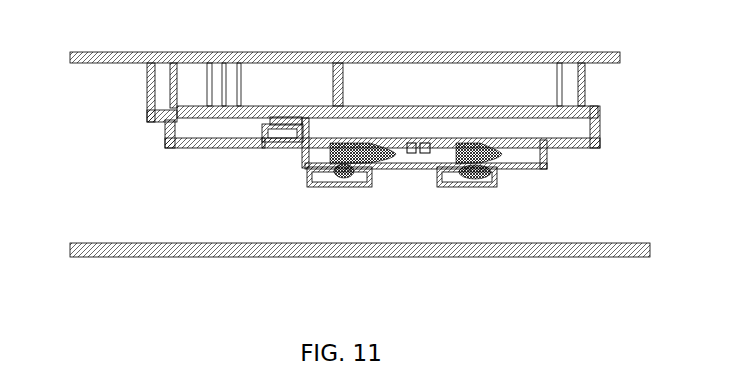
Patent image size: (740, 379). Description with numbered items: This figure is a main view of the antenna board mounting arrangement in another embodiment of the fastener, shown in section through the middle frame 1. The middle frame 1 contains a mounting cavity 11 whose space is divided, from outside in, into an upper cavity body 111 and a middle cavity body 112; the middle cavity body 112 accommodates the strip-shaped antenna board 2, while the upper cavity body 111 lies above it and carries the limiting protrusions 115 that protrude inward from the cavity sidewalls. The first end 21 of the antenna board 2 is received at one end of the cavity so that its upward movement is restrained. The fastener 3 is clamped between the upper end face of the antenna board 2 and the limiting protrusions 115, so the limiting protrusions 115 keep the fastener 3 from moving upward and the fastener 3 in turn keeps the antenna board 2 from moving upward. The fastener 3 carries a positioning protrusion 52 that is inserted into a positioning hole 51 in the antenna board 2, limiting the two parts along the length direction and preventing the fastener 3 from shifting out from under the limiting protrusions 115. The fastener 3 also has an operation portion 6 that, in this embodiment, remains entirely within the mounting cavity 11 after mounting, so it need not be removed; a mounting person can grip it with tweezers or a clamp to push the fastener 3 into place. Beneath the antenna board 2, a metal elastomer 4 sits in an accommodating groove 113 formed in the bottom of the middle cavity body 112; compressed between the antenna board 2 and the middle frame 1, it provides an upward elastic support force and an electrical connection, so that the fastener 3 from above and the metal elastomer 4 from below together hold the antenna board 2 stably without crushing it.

The middle frame 1 is at (337, 230).
The antenna board 2 is at (444, 134).
The first end 21 is at (574, 127).
The fastener 3 is at (227, 112).
The metal elastomer 4 is at (491, 157).
The positioning hole 51 is at (285, 133).
The positioning protrusion 52 is at (288, 118).
The operation portion 6 is at (340, 77).
The mounting cavity 11 is at (72, 107).
The upper cavity body 111 is at (160, 101).
The middle cavity body 112 is at (167, 132).
The accommodating groove 113 is at (452, 176).
The limiting protrusion 115 is at (194, 70).